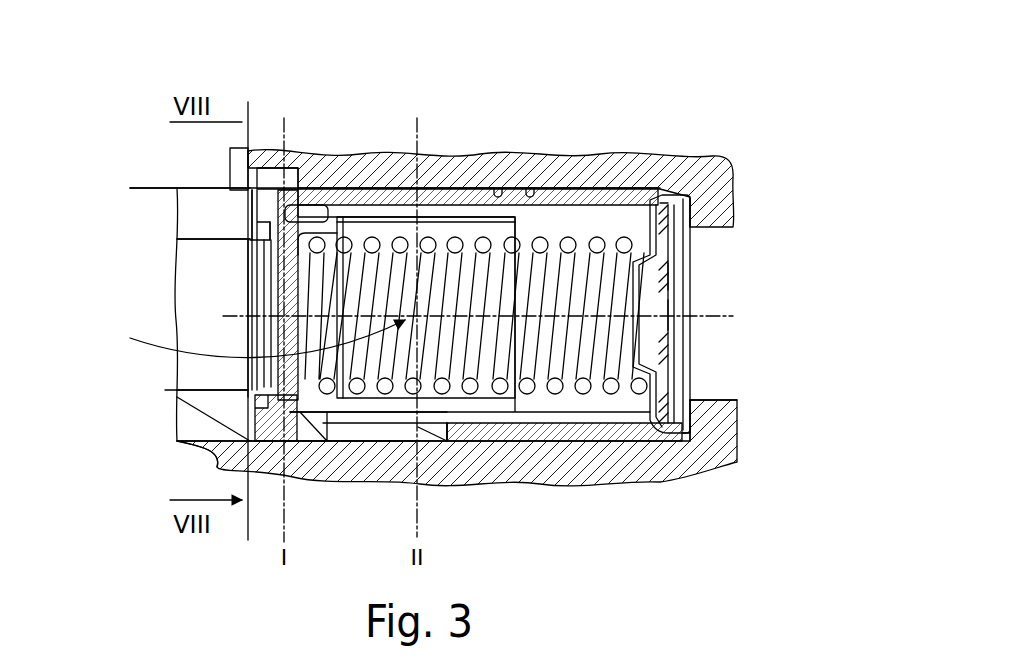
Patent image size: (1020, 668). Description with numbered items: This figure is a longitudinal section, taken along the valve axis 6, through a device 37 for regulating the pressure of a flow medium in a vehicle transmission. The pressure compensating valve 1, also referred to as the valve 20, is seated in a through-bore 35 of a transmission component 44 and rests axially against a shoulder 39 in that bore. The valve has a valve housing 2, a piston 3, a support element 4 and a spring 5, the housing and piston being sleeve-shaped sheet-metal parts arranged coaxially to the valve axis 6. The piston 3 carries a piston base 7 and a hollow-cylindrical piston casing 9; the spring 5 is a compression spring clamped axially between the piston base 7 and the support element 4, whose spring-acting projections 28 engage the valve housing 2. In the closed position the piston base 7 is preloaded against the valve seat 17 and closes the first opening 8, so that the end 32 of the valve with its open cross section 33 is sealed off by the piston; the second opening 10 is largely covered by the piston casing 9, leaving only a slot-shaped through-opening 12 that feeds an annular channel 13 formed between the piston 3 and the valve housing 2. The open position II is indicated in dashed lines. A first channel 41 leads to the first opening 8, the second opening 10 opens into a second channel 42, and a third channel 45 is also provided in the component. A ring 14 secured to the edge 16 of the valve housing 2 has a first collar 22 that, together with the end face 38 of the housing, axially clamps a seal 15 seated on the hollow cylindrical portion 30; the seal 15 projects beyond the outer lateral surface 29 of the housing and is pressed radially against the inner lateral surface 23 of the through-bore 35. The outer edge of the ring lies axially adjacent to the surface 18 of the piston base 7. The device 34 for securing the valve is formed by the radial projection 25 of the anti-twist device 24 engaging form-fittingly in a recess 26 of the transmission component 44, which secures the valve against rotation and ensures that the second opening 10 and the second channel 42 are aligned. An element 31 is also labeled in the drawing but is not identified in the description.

The pressure compensating valve 1 is at (645, 410).
The valve 20 is at (715, 500).
The valve housing 2 is at (360, 195).
The piston 3 is at (432, 207).
The support element 4 is at (600, 473).
The spring 5 is at (540, 240).
The valve axis 6 is at (723, 317).
The piston base 7 is at (245, 350).
The first opening 8 is at (257, 307).
The piston casing 9 is at (497, 420).
The second opening 10 is at (380, 460).
The slot-shaped through-opening 12 is at (300, 420).
The annular channel 13 is at (322, 213).
The ring 14 is at (245, 393).
The seal 15 is at (237, 430).
The edge 16 is at (257, 443).
The valve seat 17 is at (273, 178).
The surface 18 is at (260, 282).
The first collar 22 is at (250, 205).
The inner lateral surface 23 is at (530, 190).
The anti-twist device 24 is at (252, 339).
The projection 25 is at (247, 153).
The recess 26 is at (263, 178).
The projections 28 is at (665, 195).
The outer lateral surface 29 is at (548, 440).
The hollow cylindrical portion 30 is at (238, 238).
The cap plate 31 is at (700, 312).
The end 32 is at (733, 460).
The open cross section 33 is at (690, 293).
The device for securing the pressure compensating valve 34 is at (277, 150).
The through-bore 35 is at (498, 192).
The device for regulating the pressure 37 is at (631, 108).
The end face 38 is at (248, 220).
The shoulder 39 is at (737, 406).
The first channel 41 is at (276, 265).
The second channel 42 is at (387, 435).
The transmission component 44 is at (645, 310).
The third channel 45 is at (732, 228).